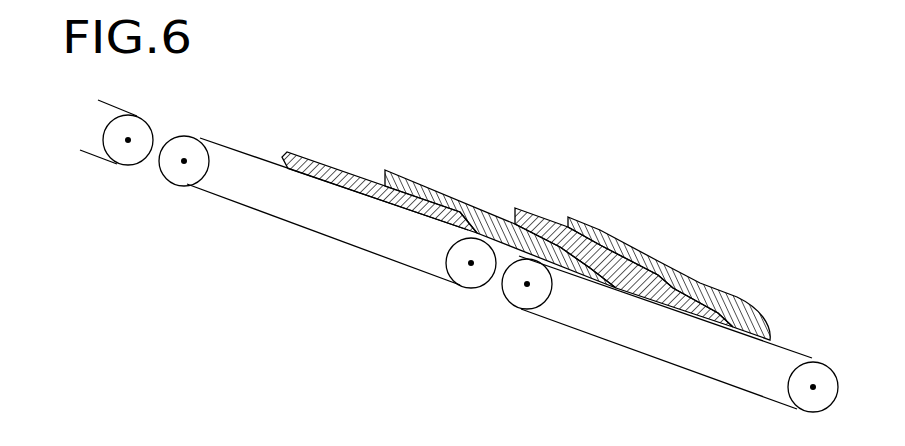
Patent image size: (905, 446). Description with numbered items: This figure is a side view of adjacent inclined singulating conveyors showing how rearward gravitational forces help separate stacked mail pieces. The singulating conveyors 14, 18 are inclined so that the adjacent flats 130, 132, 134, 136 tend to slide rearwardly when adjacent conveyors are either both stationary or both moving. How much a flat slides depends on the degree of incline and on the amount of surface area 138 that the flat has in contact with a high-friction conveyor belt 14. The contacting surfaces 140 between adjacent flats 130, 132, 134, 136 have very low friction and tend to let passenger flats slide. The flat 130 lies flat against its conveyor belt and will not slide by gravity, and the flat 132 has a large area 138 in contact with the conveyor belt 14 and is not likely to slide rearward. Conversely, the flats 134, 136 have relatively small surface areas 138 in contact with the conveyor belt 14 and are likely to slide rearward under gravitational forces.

The singulating conveyor 14 is at (570, 327).
The singulating conveyor 18 is at (85, 155).
The flat 130 is at (318, 153).
The flat 132 is at (398, 170).
The flat 134 is at (658, 262).
The flat 136 is at (740, 297).
The surface area 138 is at (420, 219).
The contacting surfaces 140 is at (443, 190).